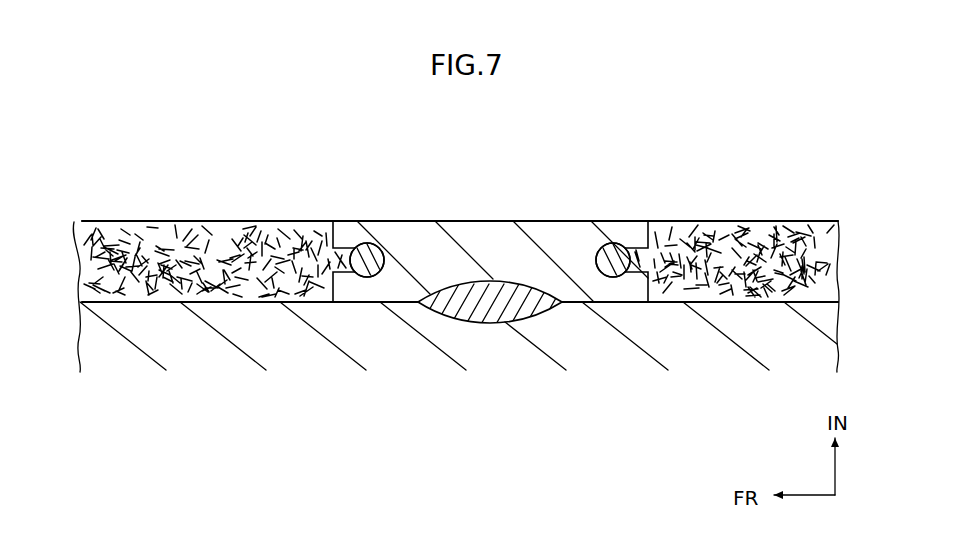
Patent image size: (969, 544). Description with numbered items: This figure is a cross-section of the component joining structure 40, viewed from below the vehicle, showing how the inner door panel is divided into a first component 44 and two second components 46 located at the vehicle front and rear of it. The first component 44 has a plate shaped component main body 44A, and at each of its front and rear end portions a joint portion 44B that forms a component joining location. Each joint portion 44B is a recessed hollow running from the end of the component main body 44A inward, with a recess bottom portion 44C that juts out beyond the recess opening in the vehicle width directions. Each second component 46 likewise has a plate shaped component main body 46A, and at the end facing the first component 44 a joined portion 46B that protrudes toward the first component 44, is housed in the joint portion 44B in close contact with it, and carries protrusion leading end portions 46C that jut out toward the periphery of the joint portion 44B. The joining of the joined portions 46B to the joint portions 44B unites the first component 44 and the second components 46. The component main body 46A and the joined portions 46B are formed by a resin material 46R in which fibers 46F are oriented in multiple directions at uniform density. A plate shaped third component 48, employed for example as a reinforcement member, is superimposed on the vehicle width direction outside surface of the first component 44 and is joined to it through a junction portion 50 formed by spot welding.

The component joining structure 40 is at (488, 198).
The first component 44 is at (460, 220).
The component main body 44A is at (437, 221).
The joint portion 44B is at (343, 252).
The recess bottom portion 44C is at (372, 245).
The second component 46 is at (214, 203).
The component main body 46A is at (258, 221).
The joined portion 46B is at (338, 280).
The protrusion leading end portion 46C is at (372, 278).
The fibers 46F is at (131, 221).
The resin material 46R is at (74, 222).
The third component 48 is at (578, 357).
The junction portion 50 is at (487, 322).